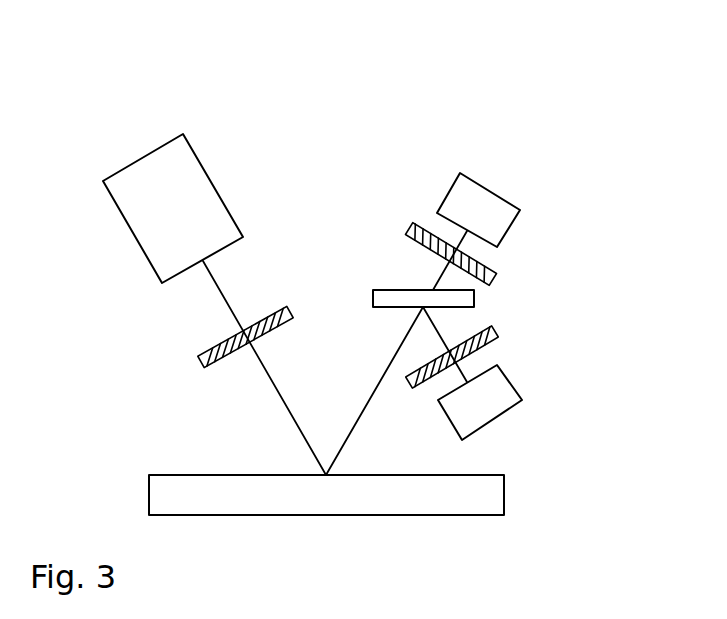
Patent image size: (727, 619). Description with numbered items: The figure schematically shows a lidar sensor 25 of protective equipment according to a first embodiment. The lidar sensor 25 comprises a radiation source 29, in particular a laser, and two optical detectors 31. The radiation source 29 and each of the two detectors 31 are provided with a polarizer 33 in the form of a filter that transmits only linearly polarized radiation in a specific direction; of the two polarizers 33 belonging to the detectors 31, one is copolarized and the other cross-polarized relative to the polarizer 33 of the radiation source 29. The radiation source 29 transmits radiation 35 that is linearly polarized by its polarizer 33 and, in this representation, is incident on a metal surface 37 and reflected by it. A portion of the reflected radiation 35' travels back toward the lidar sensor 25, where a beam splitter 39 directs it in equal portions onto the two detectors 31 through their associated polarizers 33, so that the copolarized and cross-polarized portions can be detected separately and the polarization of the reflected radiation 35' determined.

The lidar sensor 25 is at (359, 120).
The radiation source 29 is at (158, 215).
The optical detector 31 is at (497, 227).
The polarizer 33 is at (206, 356).
The radiation 35 is at (264, 368).
The reflected radiation 35' is at (396, 353).
The metal surface 37 is at (437, 495).
The beam splitter 39 is at (388, 297).